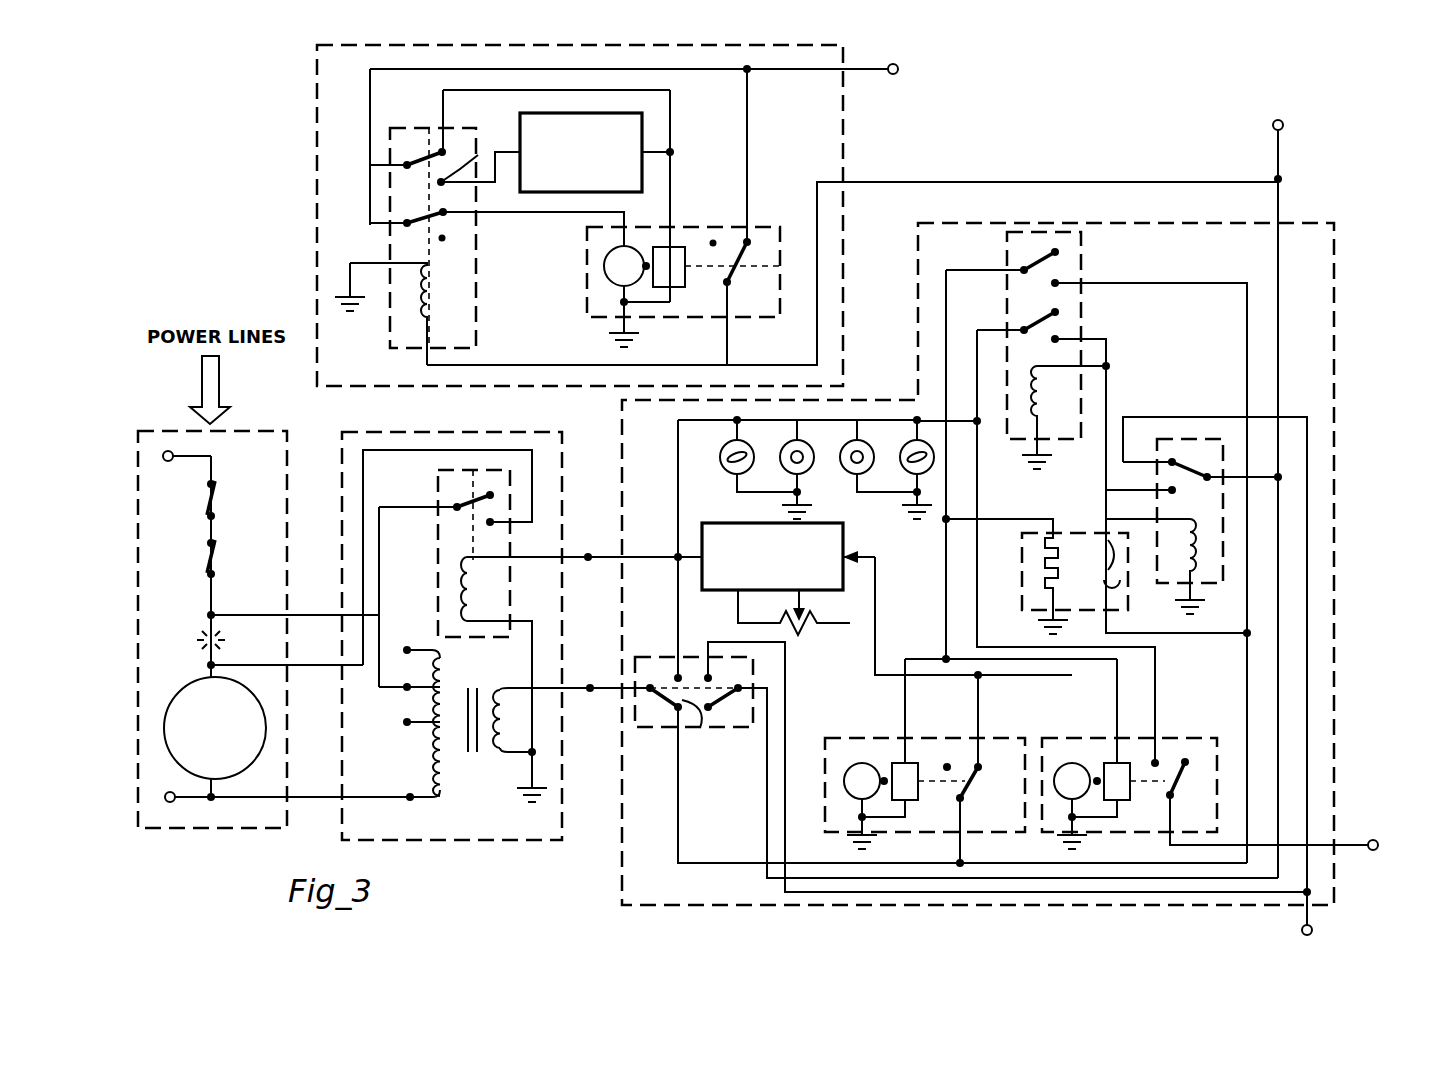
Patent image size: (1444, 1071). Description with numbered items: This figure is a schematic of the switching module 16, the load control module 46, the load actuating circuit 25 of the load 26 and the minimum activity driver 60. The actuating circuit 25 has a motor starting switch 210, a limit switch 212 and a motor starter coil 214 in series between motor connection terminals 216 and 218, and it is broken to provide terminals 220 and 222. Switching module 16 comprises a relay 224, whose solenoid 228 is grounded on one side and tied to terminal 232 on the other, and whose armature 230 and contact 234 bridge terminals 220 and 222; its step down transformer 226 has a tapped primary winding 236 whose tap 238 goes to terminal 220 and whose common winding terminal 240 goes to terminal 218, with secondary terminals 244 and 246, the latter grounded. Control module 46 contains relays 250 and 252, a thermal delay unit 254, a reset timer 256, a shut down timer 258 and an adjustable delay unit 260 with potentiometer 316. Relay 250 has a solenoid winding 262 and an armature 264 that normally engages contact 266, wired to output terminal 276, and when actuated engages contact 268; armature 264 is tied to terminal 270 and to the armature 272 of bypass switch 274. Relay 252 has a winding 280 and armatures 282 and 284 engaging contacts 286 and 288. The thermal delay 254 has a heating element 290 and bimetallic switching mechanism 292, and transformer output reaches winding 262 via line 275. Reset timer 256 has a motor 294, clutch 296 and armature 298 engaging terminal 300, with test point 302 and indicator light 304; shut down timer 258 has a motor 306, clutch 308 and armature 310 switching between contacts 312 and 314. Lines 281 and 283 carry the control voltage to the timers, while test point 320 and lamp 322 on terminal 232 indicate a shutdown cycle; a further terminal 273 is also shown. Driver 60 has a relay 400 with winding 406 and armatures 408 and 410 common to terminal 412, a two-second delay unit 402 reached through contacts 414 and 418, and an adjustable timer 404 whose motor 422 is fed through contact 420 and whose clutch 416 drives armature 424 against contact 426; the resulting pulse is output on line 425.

The switching module 16 is at (453, 843).
The load actuating circuit 25 is at (206, 611).
The load 26 is at (233, 853).
The load control module 46 is at (617, 872).
The minimum activity driver 60 is at (312, 194).
The motor starting switch 210 is at (218, 500).
The limit switch 212 is at (218, 550).
The motor starter coil 214 is at (230, 780).
The motor connection terminal 216 is at (166, 461).
The motor connection terminal 218 is at (166, 801).
The terminal 220 is at (216, 612).
The terminal 222 is at (216, 665).
The relay 224 is at (438, 562).
The step down transformer 226 is at (465, 760).
The solenoid 228 is at (462, 588).
The solenoid actuated armature 230 is at (457, 504).
The terminal 232 is at (589, 554).
The contact 234 is at (488, 522).
The primary winding 236 is at (448, 680).
The 208-voltage tap 238 is at (404, 690).
The common winding terminal 240 is at (410, 797).
The secondary terminal 244 is at (590, 684).
The secondary terminal 246 is at (536, 752).
The relay 250 is at (1223, 585).
The relay 252 is at (1007, 240).
The thermal delay unit 254 is at (1022, 607).
The reset timer 256 is at (1157, 830).
The shut down timer 258 is at (940, 830).
The adjustable delay unit 260 is at (768, 522).
The solenoid winding 262 is at (1183, 565).
The solenoid actuated armature 264 is at (1223, 458).
The contact 266 is at (1170, 458).
The contact 268 is at (1168, 492).
The terminal 270 is at (1283, 135).
The armature 272 is at (948, 767).
The line terminal 273 is at (1370, 840).
The bypass switch 274 is at (670, 655).
The line 275 is at (1040, 858).
The output terminal 276 is at (1302, 930).
The solenoid winding 280 is at (1022, 380).
The line 281 is at (977, 493).
The armature 282 is at (1060, 255).
The line 283 is at (918, 365).
The armature 284 is at (1060, 315).
The contact 286 is at (1045, 285).
The contact 288 is at (1060, 338).
The heating element 290 is at (1105, 545).
The bimetallic switching mechanism 292 is at (1019, 568).
The motor 294 is at (1060, 765).
The clutching mechanism 296 is at (1130, 798).
The switching armature 298 is at (1176, 780).
The terminal 300 is at (1158, 760).
The test point 302 is at (833, 438).
The indicator light 304 is at (895, 453).
The motor 306 is at (840, 765).
The clutching mechanism 308 is at (895, 763).
The armature 310 is at (985, 829).
The contact 312 is at (945, 763).
The contact 314 is at (987, 734).
The adjustment potentiometer 316 is at (810, 617).
The test point 320 is at (812, 465).
The indicator lamp 322 is at (760, 438).
The relay 400 is at (500, 307).
The two-second delay unit 402 is at (594, 113).
The adjustable timer 404 is at (716, 318).
The solenoid winding 406 is at (440, 282).
The armature 408 is at (407, 160).
The armature 410 is at (404, 226).
The terminal 412 is at (890, 74).
The contact 414 is at (444, 150).
The clutching mechanism 416 is at (673, 247).
The second contact 418 is at (478, 155).
The contact 420 is at (452, 214).
The motor 422 is at (604, 258).
The armature 424 is at (732, 282).
The line 425 is at (843, 280).
The contact 426 is at (751, 242).